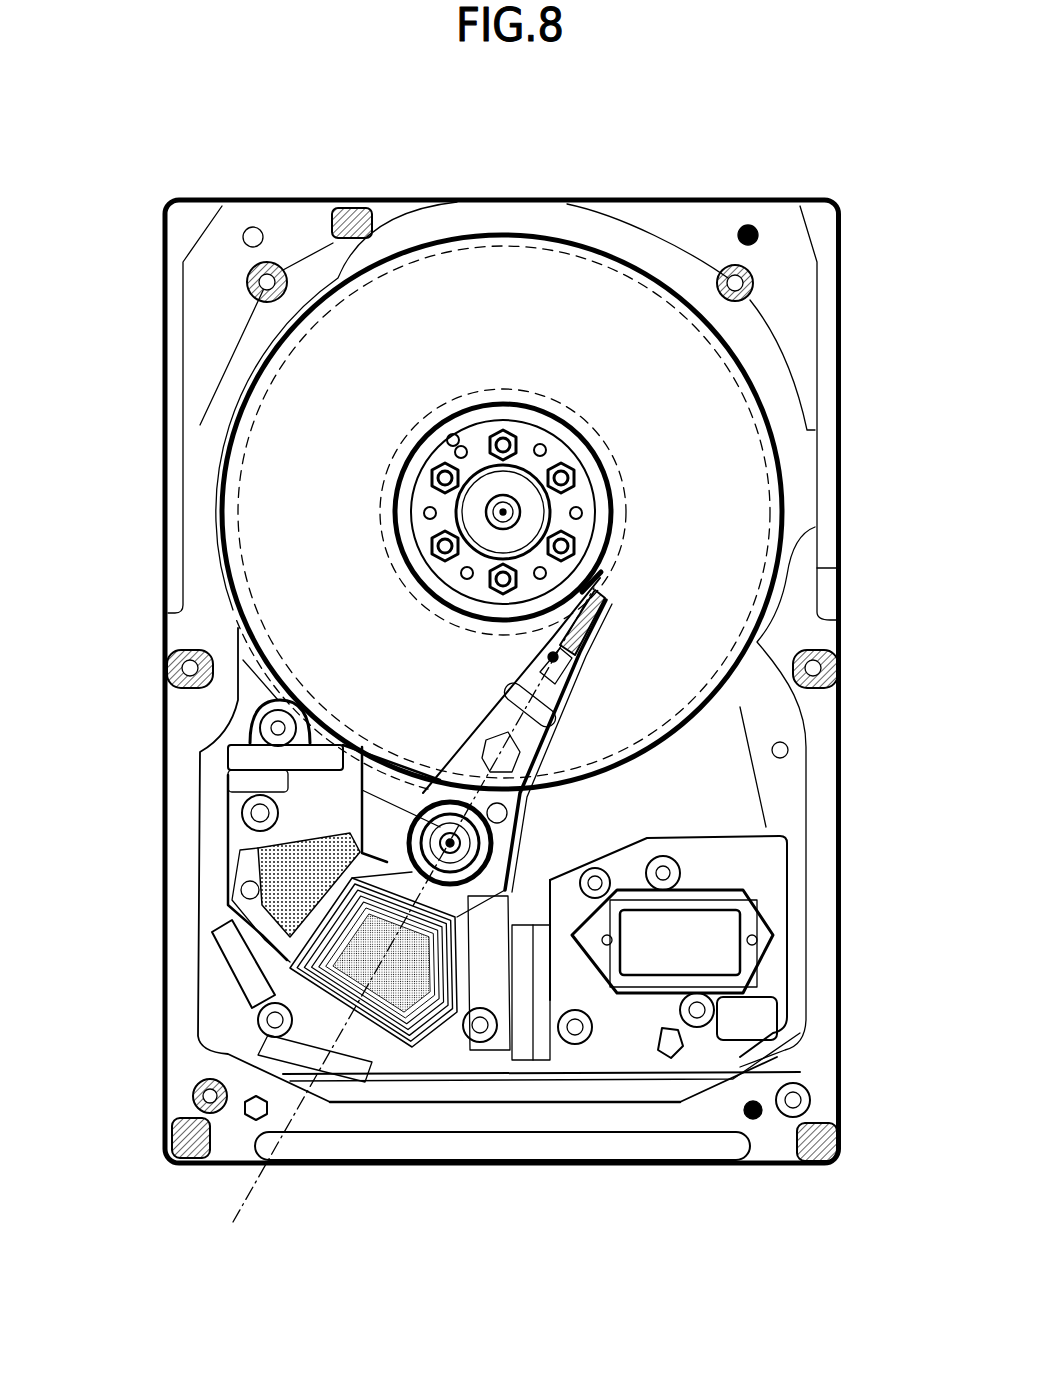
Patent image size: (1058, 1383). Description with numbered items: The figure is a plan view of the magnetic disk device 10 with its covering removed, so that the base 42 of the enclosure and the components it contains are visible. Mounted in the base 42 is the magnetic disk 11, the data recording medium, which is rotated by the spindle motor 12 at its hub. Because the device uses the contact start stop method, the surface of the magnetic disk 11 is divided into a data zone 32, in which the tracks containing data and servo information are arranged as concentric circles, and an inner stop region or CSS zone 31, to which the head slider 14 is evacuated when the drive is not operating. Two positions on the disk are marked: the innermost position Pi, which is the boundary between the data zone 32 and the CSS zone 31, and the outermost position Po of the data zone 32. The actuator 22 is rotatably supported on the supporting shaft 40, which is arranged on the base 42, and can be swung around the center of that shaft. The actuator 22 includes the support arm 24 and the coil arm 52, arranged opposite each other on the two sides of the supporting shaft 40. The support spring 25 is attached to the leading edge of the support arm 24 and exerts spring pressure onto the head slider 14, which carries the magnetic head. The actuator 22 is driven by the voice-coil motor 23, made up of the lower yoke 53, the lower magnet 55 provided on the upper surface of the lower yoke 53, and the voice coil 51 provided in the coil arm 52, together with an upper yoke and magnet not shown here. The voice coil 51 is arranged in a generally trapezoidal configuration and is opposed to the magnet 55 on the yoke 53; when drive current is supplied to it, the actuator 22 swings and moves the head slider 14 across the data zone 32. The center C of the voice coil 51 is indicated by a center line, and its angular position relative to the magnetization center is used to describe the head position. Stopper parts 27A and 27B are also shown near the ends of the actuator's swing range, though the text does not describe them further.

The magnetic disk device 10 is at (606, 138).
The magnetic disk 11 is at (715, 445).
The spindle motor 12 is at (530, 442).
The head slider 14 is at (596, 585).
The actuator 22 is at (456, 736).
The voice-coil motor 23 is at (262, 969).
The support arm 24 is at (530, 762).
The support spring 25 is at (590, 607).
The stopper 27A is at (480, 1042).
The stopper 27B is at (228, 775).
The stop region (CSS zone) 31 is at (593, 418).
The data zone 32 is at (727, 483).
The supporting shaft 40 is at (460, 845).
The base 42 is at (815, 527).
The voice coil 51 is at (350, 1042).
The coil arm 52 is at (490, 962).
The lower yoke 53 is at (237, 862).
The lower magnet 55 is at (262, 883).
The outermost position Po is at (583, 257).
The innermost position Pi is at (452, 400).
The center of the voice coil C is at (228, 1215).